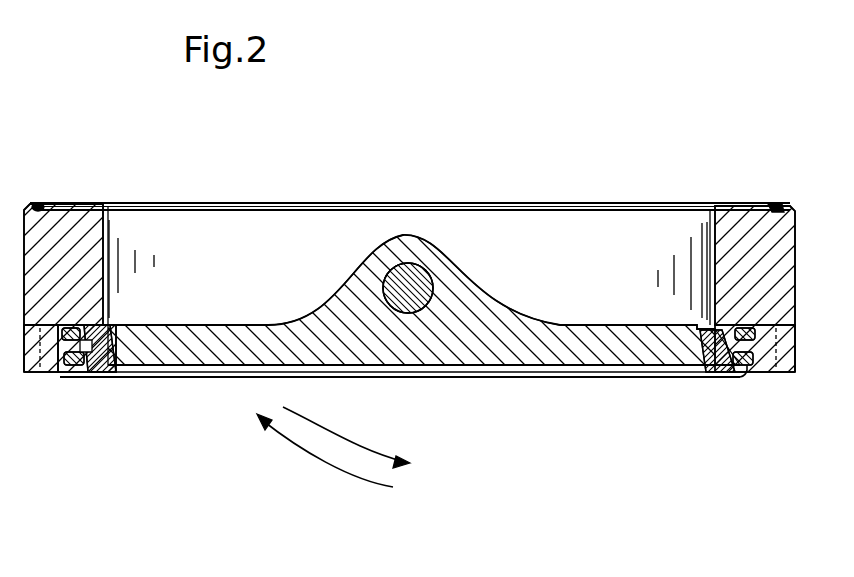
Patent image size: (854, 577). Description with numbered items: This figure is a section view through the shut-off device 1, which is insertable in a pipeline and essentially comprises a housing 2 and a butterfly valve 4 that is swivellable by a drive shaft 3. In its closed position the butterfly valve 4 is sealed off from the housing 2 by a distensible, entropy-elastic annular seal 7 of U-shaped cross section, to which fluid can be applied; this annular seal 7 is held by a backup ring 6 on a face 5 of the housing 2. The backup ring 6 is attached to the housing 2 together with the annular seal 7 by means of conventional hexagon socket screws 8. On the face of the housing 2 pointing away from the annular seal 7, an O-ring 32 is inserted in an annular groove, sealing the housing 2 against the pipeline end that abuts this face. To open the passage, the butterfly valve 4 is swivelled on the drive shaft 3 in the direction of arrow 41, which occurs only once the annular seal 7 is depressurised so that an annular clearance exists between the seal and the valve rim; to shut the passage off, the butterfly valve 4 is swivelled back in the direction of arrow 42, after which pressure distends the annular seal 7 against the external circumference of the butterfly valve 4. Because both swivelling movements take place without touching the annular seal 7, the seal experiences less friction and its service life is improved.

The shut-off device 1 is at (652, 416).
The housing 2 is at (735, 232).
The drive shaft 3 is at (421, 276).
The butterfly valve 4 is at (467, 306).
The face of the housing 5 is at (775, 373).
The backup ring 6 is at (30, 373).
The annular seal 7 is at (105, 373).
The hexagon socket screws 8 is at (45, 373).
The O-ring 32 is at (778, 208).
The arrow 41 is at (312, 462).
The arrow 42 is at (333, 442).